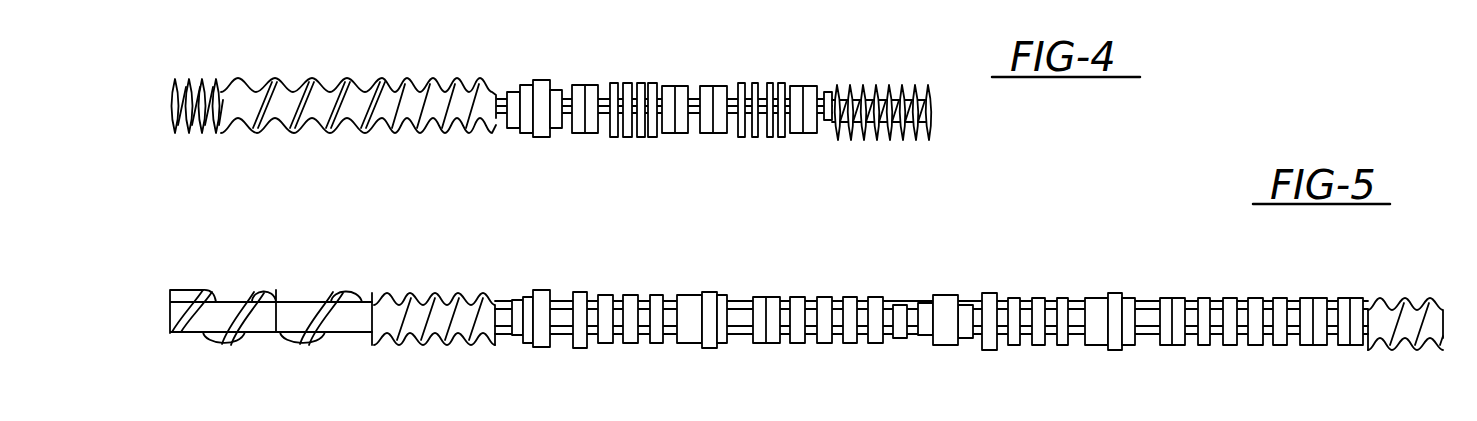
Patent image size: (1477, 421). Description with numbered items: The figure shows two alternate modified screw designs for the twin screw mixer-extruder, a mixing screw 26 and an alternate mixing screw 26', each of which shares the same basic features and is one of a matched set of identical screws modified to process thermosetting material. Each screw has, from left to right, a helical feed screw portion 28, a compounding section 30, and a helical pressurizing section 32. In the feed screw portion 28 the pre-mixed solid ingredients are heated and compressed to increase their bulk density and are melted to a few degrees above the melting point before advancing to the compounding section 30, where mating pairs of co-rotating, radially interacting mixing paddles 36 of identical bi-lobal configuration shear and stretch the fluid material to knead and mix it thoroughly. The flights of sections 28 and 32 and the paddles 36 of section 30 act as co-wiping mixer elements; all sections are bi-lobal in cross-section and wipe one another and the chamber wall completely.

In FIG. 4, the mixing screw 26 is at (573, 71).
In FIG. 5, the mixing screw (alternate design) 26' is at (810, 266).
In FIG. 4, the helical feed screw portion 28 is at (337, 76).
In FIG. 5, the helical feed screw portion 28 is at (382, 279).
In FIG. 4, the compounding section 30 is at (687, 81).
In FIG. 5, the compounding section 30 is at (740, 272).
In FIG. 4, the helical pressurizing section 32 is at (897, 75).
In FIG. 5, the helical pressurizing section 32 is at (1408, 289).
In FIG. 4, the mixing paddles 36 is at (591, 85).
In FIG. 5, the mixing paddles 36 is at (658, 294).